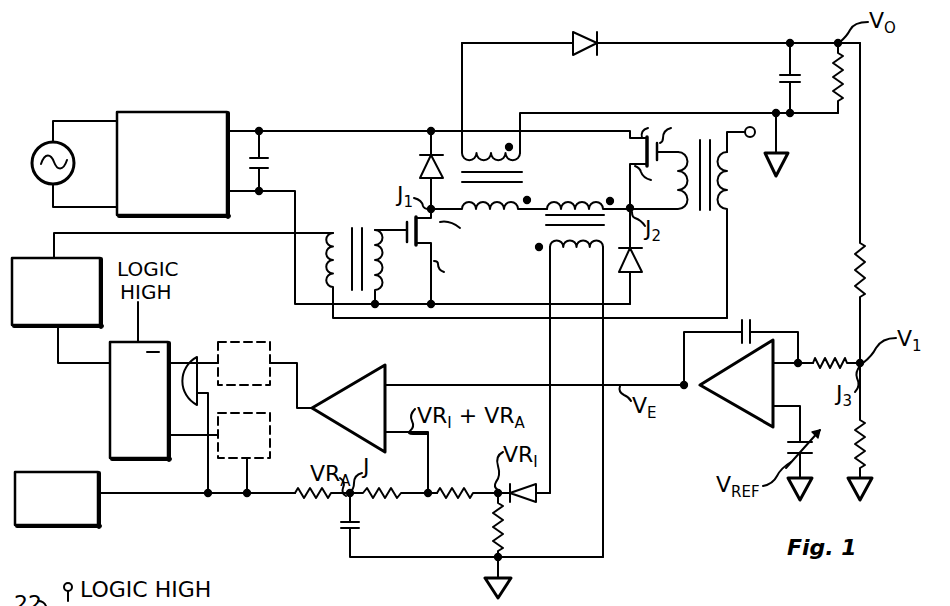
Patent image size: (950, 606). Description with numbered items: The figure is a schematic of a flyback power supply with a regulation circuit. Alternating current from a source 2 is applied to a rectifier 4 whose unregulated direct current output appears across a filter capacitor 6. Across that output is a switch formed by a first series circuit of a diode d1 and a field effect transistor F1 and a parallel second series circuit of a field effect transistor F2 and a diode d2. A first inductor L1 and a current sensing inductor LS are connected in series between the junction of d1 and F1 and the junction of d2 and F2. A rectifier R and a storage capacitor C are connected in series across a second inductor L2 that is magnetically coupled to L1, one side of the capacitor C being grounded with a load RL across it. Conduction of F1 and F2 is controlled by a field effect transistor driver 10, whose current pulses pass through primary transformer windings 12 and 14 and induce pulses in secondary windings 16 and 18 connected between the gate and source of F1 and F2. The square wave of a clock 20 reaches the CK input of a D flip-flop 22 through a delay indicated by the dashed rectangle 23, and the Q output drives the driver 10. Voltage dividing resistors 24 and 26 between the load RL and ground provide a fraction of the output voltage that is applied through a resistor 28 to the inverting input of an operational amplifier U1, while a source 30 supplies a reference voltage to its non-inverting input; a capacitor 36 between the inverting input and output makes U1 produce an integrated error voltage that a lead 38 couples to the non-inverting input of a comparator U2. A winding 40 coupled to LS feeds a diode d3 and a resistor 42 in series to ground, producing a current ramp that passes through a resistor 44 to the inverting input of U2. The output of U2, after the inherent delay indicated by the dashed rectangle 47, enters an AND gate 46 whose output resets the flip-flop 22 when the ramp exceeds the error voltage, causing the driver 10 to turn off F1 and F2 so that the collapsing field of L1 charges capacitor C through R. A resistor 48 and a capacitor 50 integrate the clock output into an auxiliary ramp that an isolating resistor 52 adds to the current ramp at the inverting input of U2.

The source 2 is at (42, 148).
The rectifier 4 is at (140, 112).
The filter capacitor 6 is at (269, 160).
The field effect transistor driver 10 is at (43, 258).
The primary transformer winding 12 is at (341, 232).
The primary transformer winding 14 is at (730, 185).
The secondary winding 16 is at (383, 266).
The secondary winding 18 is at (685, 151).
The clock 20 is at (51, 465).
The D flip-flop 22 is at (163, 342).
The dashed rectangle 23 is at (270, 437).
The voltage dividing resistor 24 is at (865, 270).
The voltage dividing resistor 26 is at (866, 446).
The resistor 28 is at (842, 358).
The source 30 is at (786, 444).
The capacitor 36 is at (747, 318).
The lead 38 is at (650, 385).
The winding 40 is at (595, 250).
The resistor 42 is at (504, 521).
The resistor 44 is at (474, 488).
The AND gate 46 is at (199, 360).
The dashed rectangle 47 is at (235, 342).
The resistor 48 is at (326, 498).
The capacitor 50 is at (359, 529).
The isolating resistor 52 is at (374, 501).
The rectifier R is at (584, 50).
The storage capacitor C is at (782, 79).
The load RL is at (835, 68).
The first inductor L1 is at (493, 212).
The second inductor L2 is at (522, 168).
The current sensing inductor LS is at (571, 201).
The diode d1 is at (421, 166).
The diode d2 is at (642, 262).
The diode d3 is at (537, 501).
The field effect transistor F1 is at (430, 238).
The field effect transistor F2 is at (640, 156).
The operational amplifier U1 is at (756, 391).
The comparator U2 is at (498, 429).